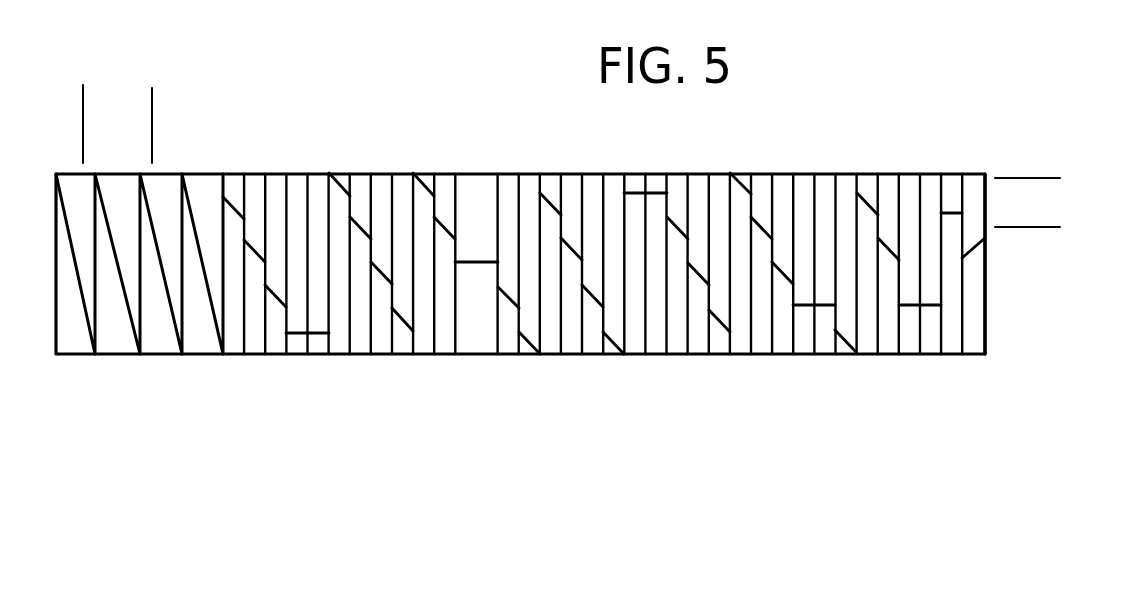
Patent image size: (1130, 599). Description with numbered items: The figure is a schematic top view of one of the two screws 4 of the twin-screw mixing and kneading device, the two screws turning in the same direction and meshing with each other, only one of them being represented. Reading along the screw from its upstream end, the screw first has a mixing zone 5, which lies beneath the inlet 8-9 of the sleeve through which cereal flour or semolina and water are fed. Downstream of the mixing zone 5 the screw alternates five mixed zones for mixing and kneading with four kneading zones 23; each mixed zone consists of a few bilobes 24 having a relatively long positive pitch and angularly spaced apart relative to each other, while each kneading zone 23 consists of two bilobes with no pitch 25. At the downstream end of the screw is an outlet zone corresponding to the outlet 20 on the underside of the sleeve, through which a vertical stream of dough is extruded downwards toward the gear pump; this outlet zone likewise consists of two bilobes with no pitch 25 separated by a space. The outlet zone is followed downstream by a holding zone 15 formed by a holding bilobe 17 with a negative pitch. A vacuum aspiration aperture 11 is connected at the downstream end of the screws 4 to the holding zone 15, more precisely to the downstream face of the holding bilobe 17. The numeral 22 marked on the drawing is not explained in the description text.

The screw 4 is at (445, 150).
The mixing zone 5 is at (56, 363).
The inlet 8-9 is at (112, 96).
The vacuum aspiration aperture 11 is at (1043, 203).
The holding zone 15 is at (986, 360).
The holding bilobe 17 is at (968, 170).
The outlet 20 is at (899, 360).
The segment 22 is at (791, 428).
The kneading zone 23 is at (833, 428).
The bilobe 24 is at (237, 174).
The bilobe with no pitch 25 is at (633, 168).